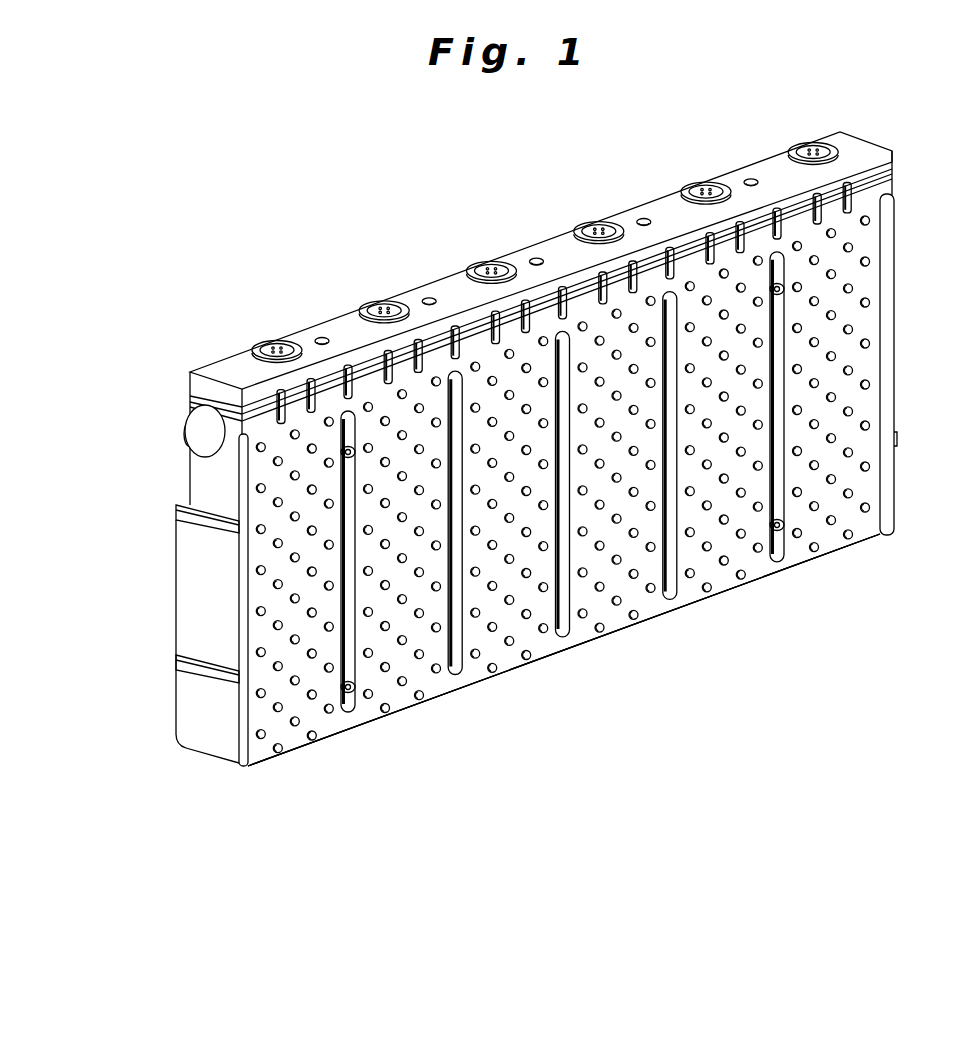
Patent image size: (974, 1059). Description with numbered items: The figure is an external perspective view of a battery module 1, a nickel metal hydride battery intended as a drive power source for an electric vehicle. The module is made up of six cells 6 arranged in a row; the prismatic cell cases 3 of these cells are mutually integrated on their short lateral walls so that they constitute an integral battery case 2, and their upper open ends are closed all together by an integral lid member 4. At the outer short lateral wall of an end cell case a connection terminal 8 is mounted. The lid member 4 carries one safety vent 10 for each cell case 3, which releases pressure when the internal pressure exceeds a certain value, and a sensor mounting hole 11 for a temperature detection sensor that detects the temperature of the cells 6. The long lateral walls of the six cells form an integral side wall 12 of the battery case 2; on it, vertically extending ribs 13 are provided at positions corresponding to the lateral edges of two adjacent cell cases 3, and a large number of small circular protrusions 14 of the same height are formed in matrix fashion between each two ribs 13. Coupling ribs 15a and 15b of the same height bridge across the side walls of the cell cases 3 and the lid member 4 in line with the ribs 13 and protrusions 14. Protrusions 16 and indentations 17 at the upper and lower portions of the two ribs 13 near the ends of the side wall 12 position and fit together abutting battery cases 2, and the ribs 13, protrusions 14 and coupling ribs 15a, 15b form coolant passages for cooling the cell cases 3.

The battery module 1 is at (178, 366).
The integral battery case 2 is at (178, 575).
The cell case 3 is at (261, 740).
The lid member 4 is at (262, 400).
The cell 6 is at (286, 754).
The connection terminal 8 is at (185, 430).
The safety vent 10 is at (590, 228).
The sensor mounting hole 11 is at (748, 181).
The side wall 12 is at (543, 662).
The rib 13 is at (240, 615).
The circular protrusion 14 is at (323, 708).
The coupling rib 15a is at (349, 370).
The coupling rib 15b is at (312, 383).
The protrusion 16 is at (355, 692).
The indentation 17 is at (340, 455).